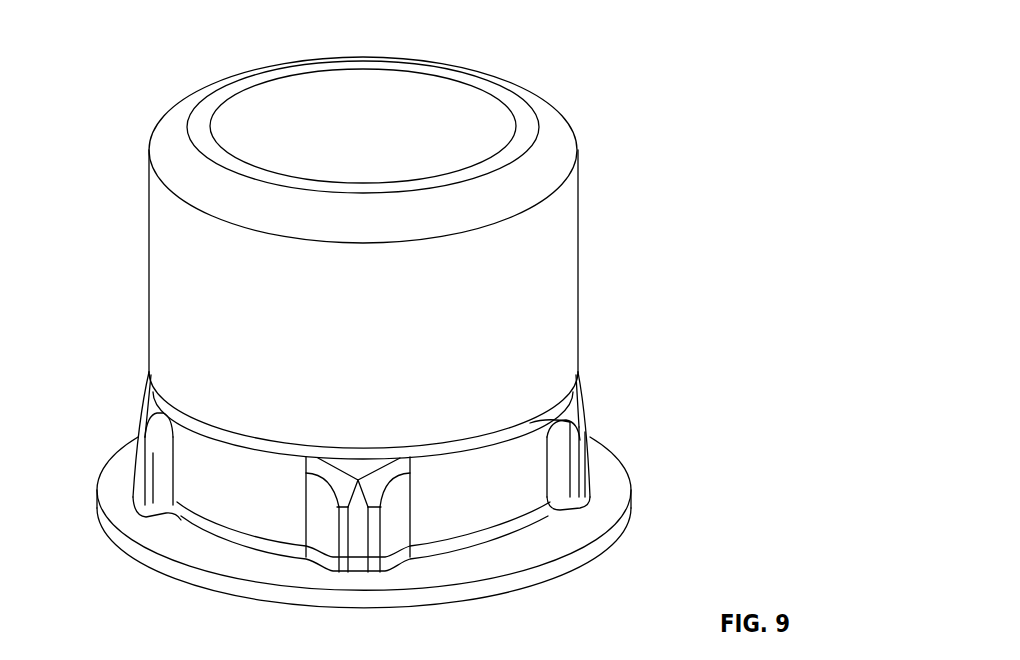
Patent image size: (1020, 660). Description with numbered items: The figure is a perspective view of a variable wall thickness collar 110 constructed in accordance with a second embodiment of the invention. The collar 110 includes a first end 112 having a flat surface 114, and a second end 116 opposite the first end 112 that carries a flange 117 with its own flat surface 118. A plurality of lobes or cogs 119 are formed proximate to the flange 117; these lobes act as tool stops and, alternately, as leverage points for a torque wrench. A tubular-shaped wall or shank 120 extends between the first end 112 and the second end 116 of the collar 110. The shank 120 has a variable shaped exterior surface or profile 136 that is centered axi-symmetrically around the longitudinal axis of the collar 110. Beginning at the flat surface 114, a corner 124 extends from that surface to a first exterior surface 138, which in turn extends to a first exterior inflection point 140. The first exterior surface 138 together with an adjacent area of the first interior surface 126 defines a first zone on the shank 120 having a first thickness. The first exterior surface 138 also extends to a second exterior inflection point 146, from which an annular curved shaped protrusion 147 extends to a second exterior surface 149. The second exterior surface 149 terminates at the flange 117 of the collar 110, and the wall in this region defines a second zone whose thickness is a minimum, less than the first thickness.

The variable wall thickness collar 110 is at (147, 82).
The first end 112 is at (461, 57).
The first interior surface 126 is at (471, 96).
The flat surface 114 is at (524, 124).
The corner 124 is at (559, 154).
The first exterior surface 138 is at (585, 240).
The shank 120 is at (417, 240).
The exterior surface 136 is at (374, 494).
The first exterior inflection point 140 is at (580, 368).
The second exterior inflection point 146 is at (582, 376).
The annular curved shaped protrusion 147 is at (162, 402).
The lobes or cogs 119 is at (580, 434).
The second exterior surface 149 is at (503, 505).
The flange 117 is at (628, 453).
The flat surface 118 is at (526, 592).
The second end 116 is at (400, 536).